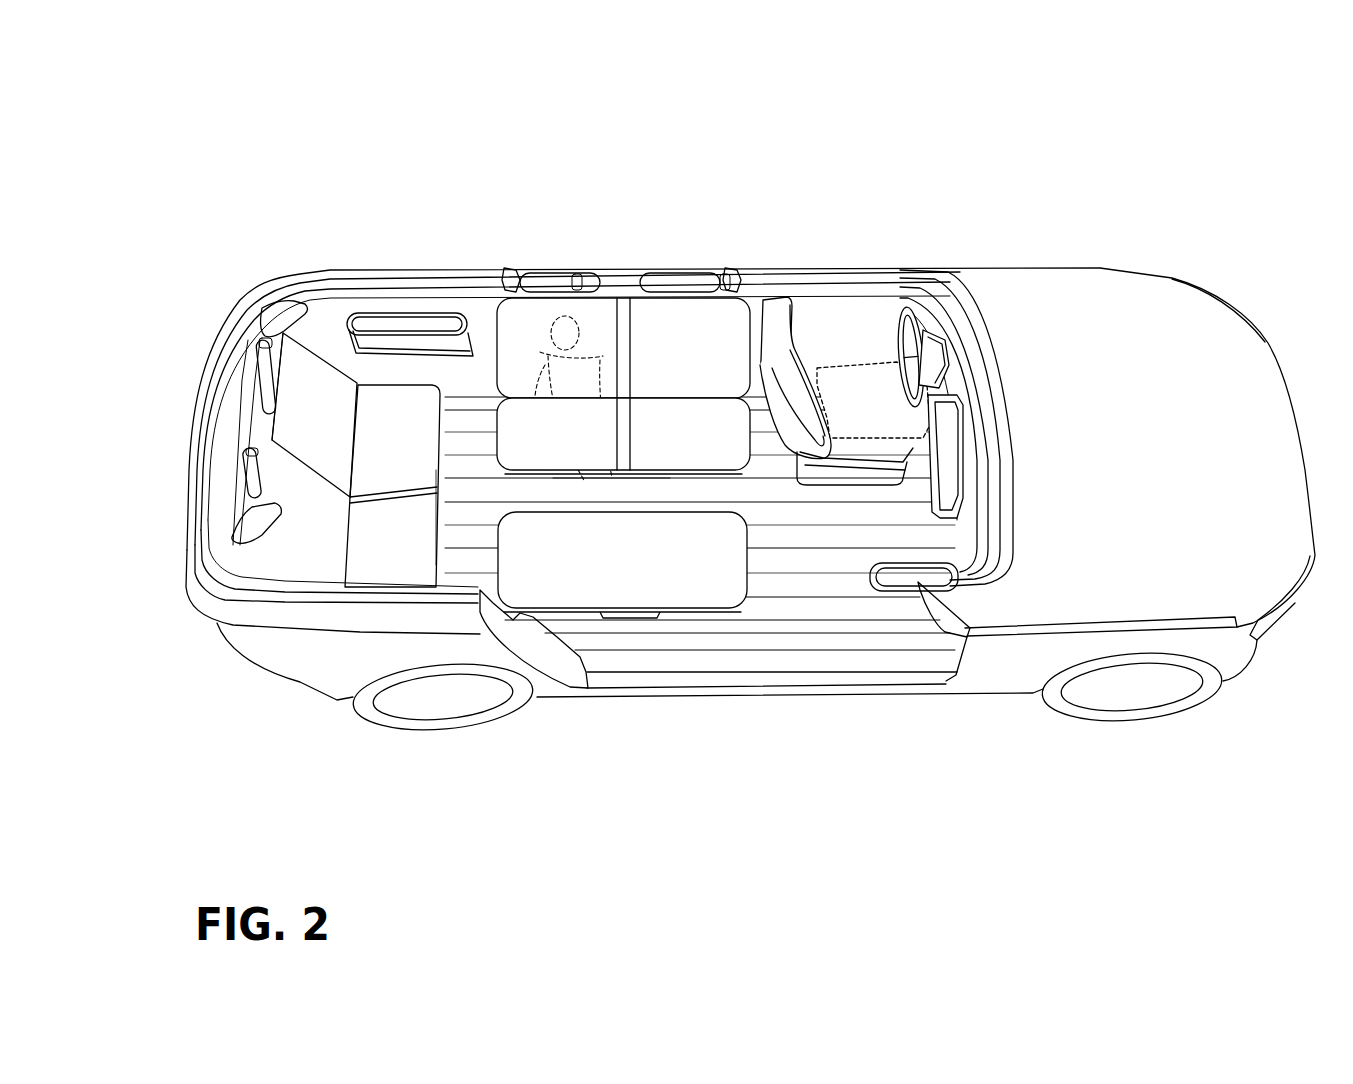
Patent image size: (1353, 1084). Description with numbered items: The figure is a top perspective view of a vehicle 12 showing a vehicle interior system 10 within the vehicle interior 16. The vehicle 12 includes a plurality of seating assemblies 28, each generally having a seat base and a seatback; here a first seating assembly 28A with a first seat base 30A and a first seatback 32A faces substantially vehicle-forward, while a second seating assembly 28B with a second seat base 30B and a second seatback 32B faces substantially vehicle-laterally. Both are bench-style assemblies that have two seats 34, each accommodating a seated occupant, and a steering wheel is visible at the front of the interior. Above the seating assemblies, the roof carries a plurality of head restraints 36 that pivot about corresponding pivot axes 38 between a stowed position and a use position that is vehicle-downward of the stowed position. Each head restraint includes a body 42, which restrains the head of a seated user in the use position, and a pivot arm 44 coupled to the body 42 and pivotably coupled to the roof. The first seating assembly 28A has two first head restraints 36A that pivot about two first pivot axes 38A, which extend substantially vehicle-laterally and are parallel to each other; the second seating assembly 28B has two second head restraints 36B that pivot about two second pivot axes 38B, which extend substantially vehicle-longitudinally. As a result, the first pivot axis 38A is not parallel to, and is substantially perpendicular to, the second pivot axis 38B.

The vehicle interior system 10 is at (432, 300).
The vehicle 12 is at (983, 213).
The vehicle interior 16 is at (840, 307).
The seating assembly 28 is at (665, 465).
The first seating assembly 28A is at (317, 482).
The second seating assembly 28B is at (753, 300).
The first seat base 30A is at (380, 567).
The second seat base 30B is at (718, 452).
The first seatback 32A is at (317, 556).
The second seatback 32B is at (723, 380).
The seats 34 is at (443, 468).
The head restraint 36 is at (428, 287).
The first head restraint 36A is at (263, 400).
The second head restraint 36B is at (578, 272).
The pivot axes 38 is at (495, 392).
The first pivot axis 38A is at (280, 287).
The second pivot axis 38B is at (482, 258).
The body 42 is at (598, 274).
The pivot arm 44 is at (297, 307).